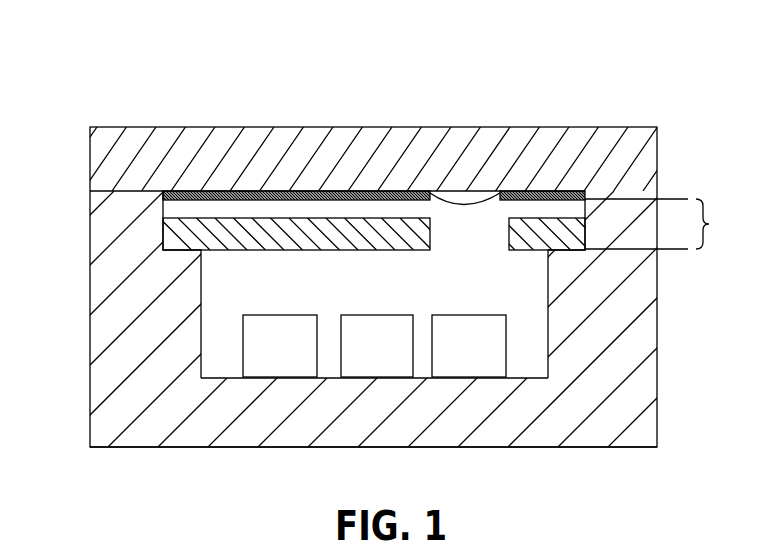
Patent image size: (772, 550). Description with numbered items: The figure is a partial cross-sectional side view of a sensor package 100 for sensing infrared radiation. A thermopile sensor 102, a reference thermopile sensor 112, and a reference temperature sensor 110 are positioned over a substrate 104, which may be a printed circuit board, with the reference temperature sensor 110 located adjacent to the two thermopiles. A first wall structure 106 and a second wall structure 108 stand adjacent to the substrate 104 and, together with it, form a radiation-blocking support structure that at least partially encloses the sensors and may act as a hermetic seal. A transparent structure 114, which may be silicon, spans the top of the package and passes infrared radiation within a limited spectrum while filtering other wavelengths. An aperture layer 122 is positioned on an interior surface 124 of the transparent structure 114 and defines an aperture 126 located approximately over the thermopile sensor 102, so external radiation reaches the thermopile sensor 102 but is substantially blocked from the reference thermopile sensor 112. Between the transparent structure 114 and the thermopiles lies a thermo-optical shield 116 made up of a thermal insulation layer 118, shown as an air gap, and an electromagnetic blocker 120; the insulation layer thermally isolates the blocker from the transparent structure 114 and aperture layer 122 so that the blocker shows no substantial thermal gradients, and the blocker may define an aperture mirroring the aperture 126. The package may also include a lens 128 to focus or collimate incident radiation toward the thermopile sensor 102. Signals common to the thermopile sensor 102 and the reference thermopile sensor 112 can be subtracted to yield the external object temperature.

The sensor package 100 is at (128, 40).
The thermopile sensor 102 is at (480, 363).
The substrate 104 is at (267, 447).
The first wall structure 106 is at (107, 337).
The second wall structure 108 is at (633, 378).
The reference temperature sensor 110 is at (371, 363).
The reference thermopile sensor 112 is at (248, 365).
The transparent structure 114 is at (127, 145).
The thermo-optical shield 116 is at (663, 224).
The thermal insulation layer 118 is at (204, 203).
The electromagnetic blocker 120 is at (177, 235).
The aperture layer 122 is at (247, 188).
The interior surface 124 is at (513, 188).
The aperture 126 is at (466, 198).
The lens 128 is at (447, 200).